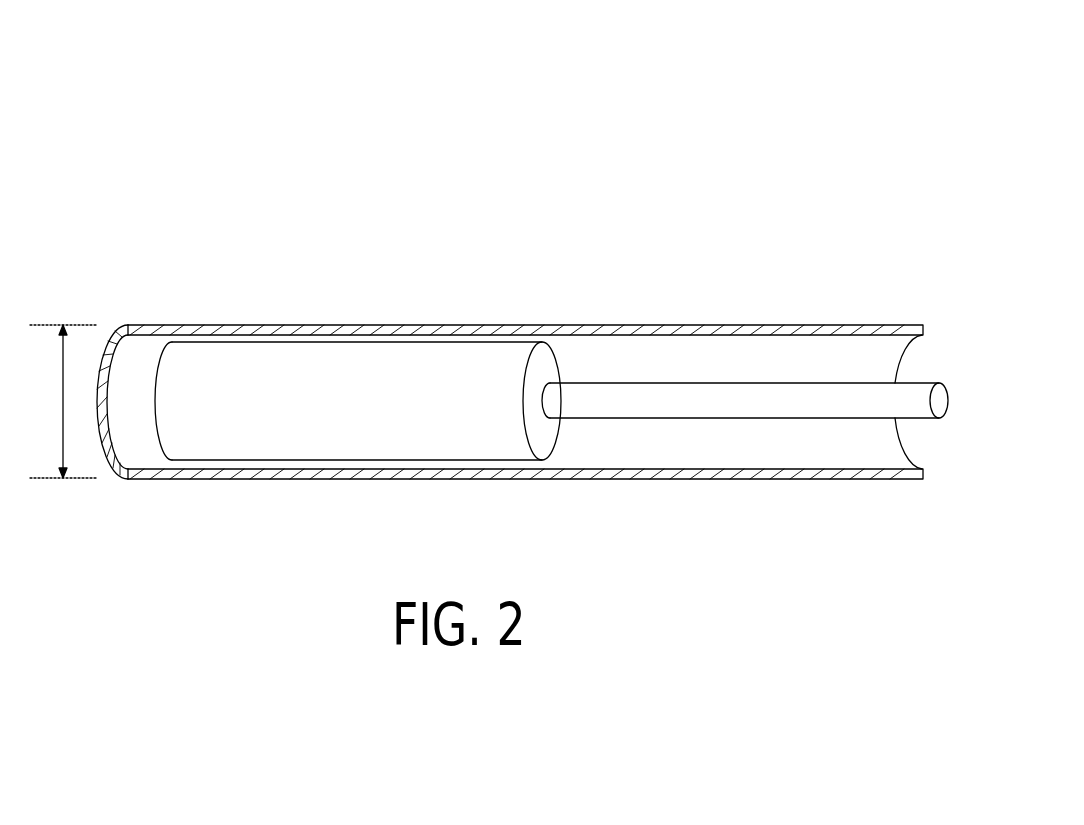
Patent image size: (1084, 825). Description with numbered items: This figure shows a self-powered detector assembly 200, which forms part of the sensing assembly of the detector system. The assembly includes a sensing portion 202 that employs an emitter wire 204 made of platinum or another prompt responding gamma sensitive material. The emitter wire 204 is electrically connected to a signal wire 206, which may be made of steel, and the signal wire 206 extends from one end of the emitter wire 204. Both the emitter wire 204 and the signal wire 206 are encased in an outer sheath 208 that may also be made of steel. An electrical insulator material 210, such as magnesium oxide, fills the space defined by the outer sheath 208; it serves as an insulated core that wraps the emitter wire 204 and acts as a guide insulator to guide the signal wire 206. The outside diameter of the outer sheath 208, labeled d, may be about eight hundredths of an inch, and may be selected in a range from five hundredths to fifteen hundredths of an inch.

The self-powered detector assembly 200 is at (553, 106).
The sensing portion 202 is at (210, 208).
The emitter wire 204 is at (425, 385).
The signal wire 206 is at (868, 383).
The outer sheath 208 is at (578, 325).
The electrical insulator material 210 is at (684, 341).